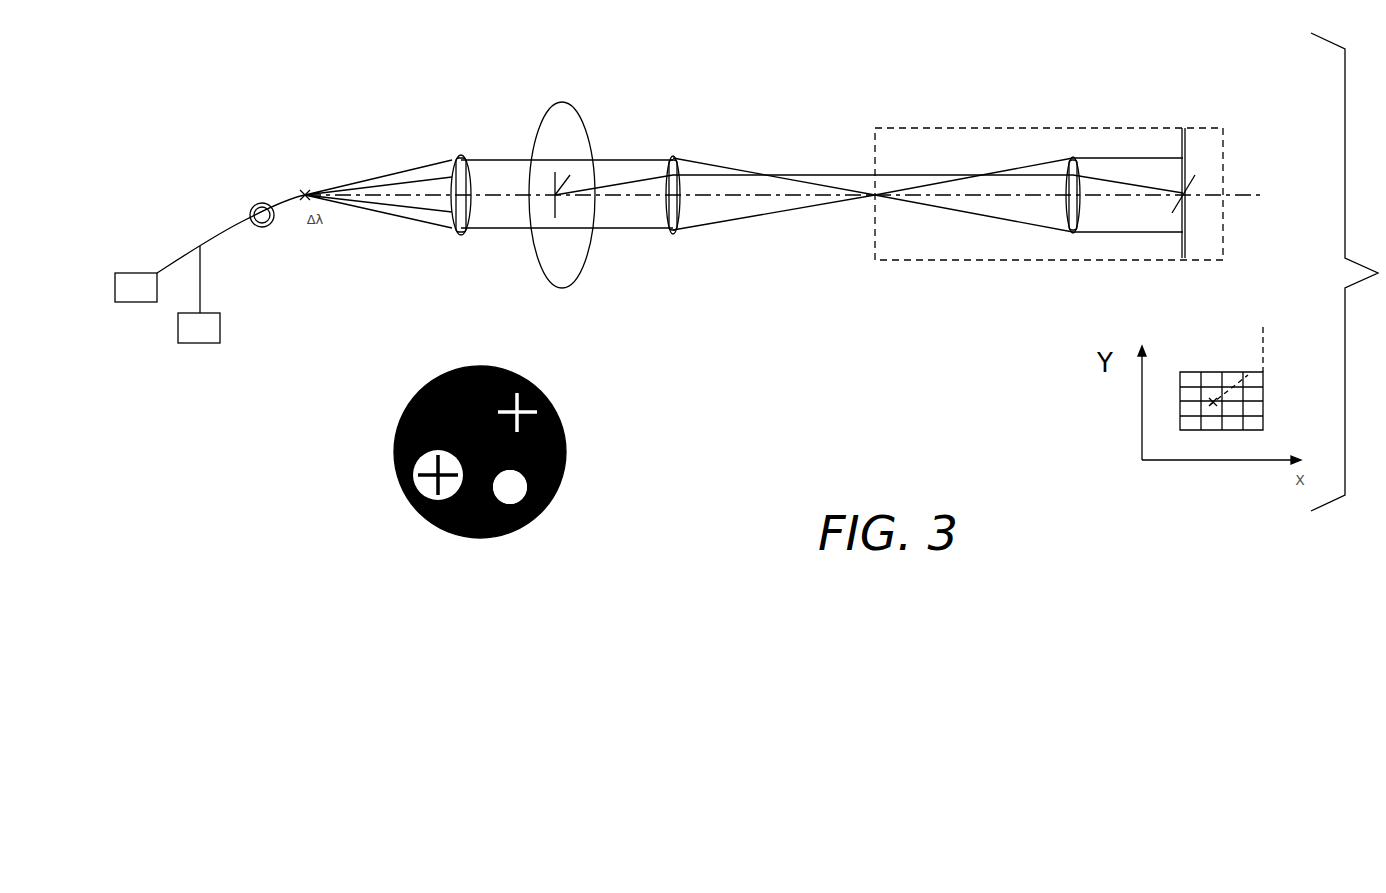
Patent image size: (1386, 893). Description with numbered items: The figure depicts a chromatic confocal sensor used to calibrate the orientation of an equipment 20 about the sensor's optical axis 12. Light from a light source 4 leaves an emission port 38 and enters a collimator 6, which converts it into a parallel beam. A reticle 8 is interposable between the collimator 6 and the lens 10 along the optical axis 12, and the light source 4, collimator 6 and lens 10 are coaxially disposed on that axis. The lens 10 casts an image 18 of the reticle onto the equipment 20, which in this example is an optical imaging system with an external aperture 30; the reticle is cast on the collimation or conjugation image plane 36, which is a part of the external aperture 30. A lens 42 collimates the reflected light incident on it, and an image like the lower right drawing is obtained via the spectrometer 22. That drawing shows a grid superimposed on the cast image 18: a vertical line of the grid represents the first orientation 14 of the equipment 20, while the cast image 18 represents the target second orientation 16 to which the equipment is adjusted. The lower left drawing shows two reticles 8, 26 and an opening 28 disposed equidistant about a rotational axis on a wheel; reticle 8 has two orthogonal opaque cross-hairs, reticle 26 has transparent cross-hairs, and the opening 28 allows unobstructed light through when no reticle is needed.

The light source 4 is at (128, 302).
The spectrometer 22 is at (197, 343).
The emission port 38 is at (305, 192).
The collimator 6 is at (460, 233).
The reticle 8 is at (555, 205).
The objective lens 10 is at (673, 233).
The optical axis 12 is at (1240, 195).
The equipment 20 is at (933, 128).
The lens 42 is at (1073, 235).
The collimation or conjugation image plane 36 is at (1183, 147).
The external aperture 30 is at (1185, 225).
The cast image 18 is at (1170, 215).
The reticle 26 is at (555, 386).
The opening 28 is at (556, 513).
The second orientation 16 is at (1253, 370).
The first orientation 14 is at (1265, 340).